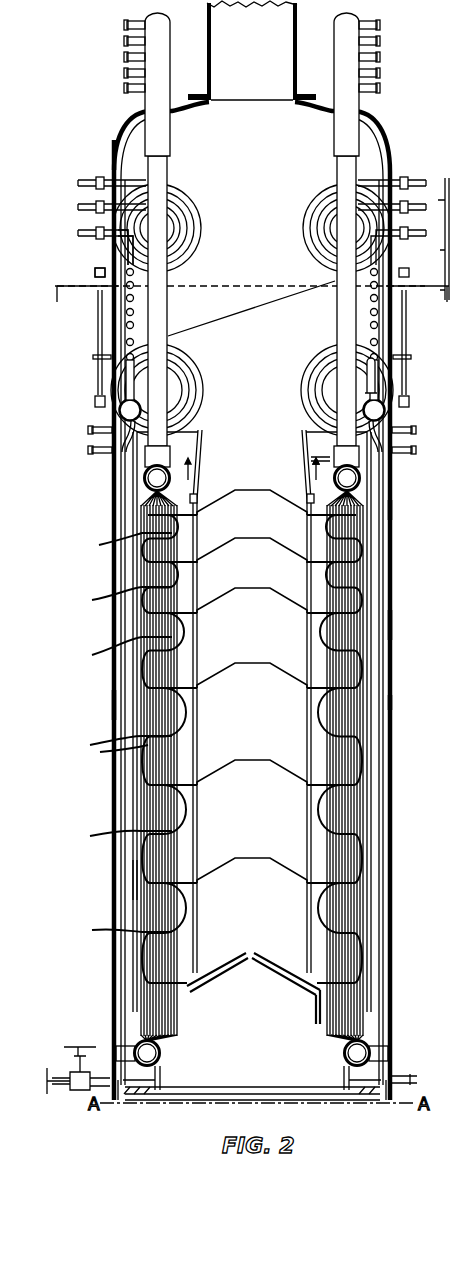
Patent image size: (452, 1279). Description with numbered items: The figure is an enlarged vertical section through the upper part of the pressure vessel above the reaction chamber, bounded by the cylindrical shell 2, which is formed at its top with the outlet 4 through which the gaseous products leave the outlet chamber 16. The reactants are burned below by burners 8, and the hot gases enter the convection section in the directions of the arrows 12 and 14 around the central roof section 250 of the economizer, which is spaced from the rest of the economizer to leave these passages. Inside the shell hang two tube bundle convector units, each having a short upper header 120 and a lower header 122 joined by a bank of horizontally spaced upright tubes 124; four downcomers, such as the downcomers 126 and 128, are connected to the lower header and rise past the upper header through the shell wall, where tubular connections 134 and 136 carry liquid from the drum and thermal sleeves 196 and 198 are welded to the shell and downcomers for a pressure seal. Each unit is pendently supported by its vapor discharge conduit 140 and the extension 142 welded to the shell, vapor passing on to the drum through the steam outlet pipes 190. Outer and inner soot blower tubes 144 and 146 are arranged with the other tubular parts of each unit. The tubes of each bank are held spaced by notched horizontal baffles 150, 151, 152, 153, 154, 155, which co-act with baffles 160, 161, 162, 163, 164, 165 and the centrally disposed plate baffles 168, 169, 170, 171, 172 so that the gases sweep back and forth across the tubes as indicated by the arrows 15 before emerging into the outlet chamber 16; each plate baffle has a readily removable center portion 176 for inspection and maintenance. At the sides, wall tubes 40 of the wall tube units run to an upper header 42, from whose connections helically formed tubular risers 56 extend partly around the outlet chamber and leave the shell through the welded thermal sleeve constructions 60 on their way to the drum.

The cylindrical shell 2 is at (392, 510).
The outlet 4 is at (257, 51).
The burners 8 is at (418, 705).
The arrow 12 is at (211, 1045).
The arrow 14 is at (302, 1048).
The arrows 15 is at (362, 796).
The outlet chamber 16 is at (264, 253).
The wall tubes 40 is at (118, 698).
The upper header 42 is at (112, 414).
The helically formed tubular risers 56 is at (241, 314).
The welded thermal sleeve constructions 60 is at (103, 242).
The upper header 120 is at (146, 481).
The lower header 122 is at (136, 1046).
The upright tubes 124 is at (168, 730).
The downcomer 126 is at (188, 196).
The downcomer 128 is at (181, 228).
The tubular connection 134 is at (88, 180).
The tubular connection 136 is at (80, 205).
The vapor discharge conduit 140 is at (162, 314).
The extension 142 is at (149, 20).
The outer soot blower tube 144 is at (134, 875).
The inner soot blower tube 146 is at (308, 708).
The horizontal baffle 150 is at (118, 543).
The horizontal baffle 151 is at (115, 597).
The horizontal baffle 152 is at (115, 650).
The horizontal baffle 153 is at (113, 743).
The horizontal baffle 154 is at (113, 833).
The horizontal baffle 155 is at (115, 925).
The baffle 160 is at (199, 496).
The baffle 161 is at (195, 558).
The baffle 162 is at (194, 608).
The baffle 163 is at (192, 672).
The baffle 164 is at (193, 760).
The baffle 165 is at (192, 868).
The plate baffle 168 is at (288, 549).
The plate baffle 169 is at (285, 600).
The plate baffle 170 is at (284, 669).
The plate baffle 171 is at (286, 772).
The plate baffle 172 is at (290, 868).
The removable center portion 176 is at (247, 492).
The steam outlet pipes 190 is at (125, 86).
The thermal sleeve 196 is at (106, 208).
The thermal sleeve 198 is at (100, 135).
The central roof section 250 is at (277, 968).